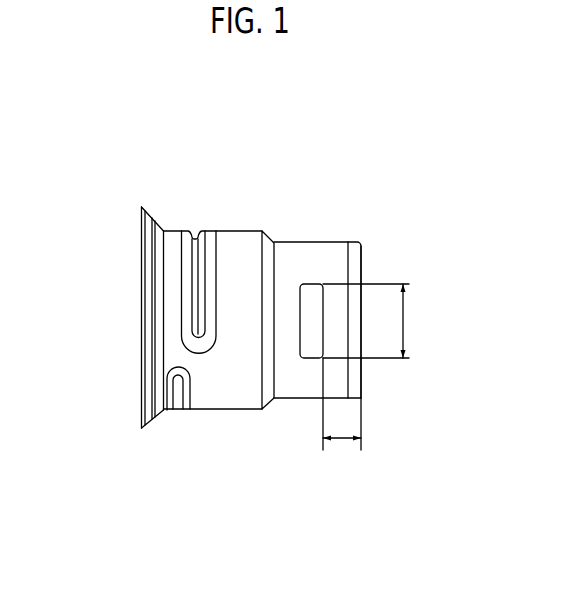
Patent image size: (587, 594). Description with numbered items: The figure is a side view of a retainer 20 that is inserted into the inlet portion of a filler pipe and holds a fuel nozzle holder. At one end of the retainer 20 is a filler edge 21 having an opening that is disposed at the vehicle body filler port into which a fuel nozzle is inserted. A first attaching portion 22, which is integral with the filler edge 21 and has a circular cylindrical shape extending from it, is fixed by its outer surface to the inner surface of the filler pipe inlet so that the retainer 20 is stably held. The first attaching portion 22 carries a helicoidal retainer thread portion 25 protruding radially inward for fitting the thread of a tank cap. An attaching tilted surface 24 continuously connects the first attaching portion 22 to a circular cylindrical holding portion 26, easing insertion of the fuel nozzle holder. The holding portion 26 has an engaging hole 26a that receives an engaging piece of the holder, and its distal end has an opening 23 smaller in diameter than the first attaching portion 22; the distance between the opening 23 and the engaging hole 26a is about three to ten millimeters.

The retainer 20 is at (120, 308).
The filler edge 21 is at (143, 209).
The first attaching portion 22 is at (227, 247).
The opening 23 is at (363, 260).
The attaching tilted surface 24 is at (273, 243).
The retainer thread portion 25 is at (182, 397).
The holding portion 26 is at (333, 253).
The engaging hole 26a is at (312, 313).